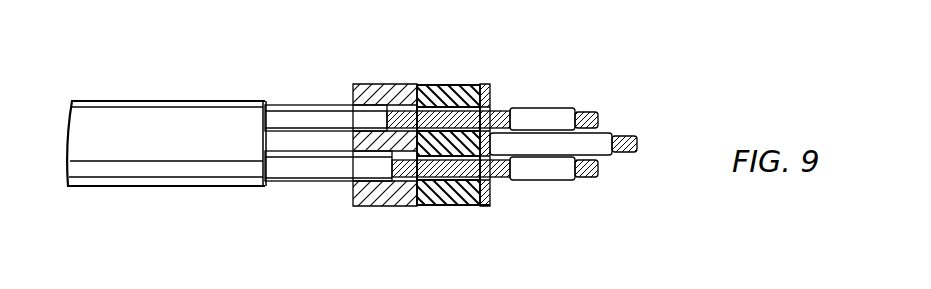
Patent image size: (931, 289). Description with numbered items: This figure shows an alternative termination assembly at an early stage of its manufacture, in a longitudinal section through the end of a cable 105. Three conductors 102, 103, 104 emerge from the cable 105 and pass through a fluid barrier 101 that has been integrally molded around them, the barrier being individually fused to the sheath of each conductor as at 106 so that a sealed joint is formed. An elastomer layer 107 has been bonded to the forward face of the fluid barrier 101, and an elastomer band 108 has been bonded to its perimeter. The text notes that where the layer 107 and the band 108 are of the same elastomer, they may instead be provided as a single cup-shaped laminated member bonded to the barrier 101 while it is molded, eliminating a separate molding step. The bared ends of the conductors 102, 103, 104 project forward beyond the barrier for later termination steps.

The fluid barrier 101 is at (458, 100).
The conductor 102 is at (594, 178).
The conductor 103 is at (628, 132).
The conductor 104 is at (590, 112).
The cable 105 is at (198, 190).
The fused sheath region 106 is at (575, 181).
The elastomer layer 107 is at (492, 98).
The elastomer band 108 is at (462, 205).